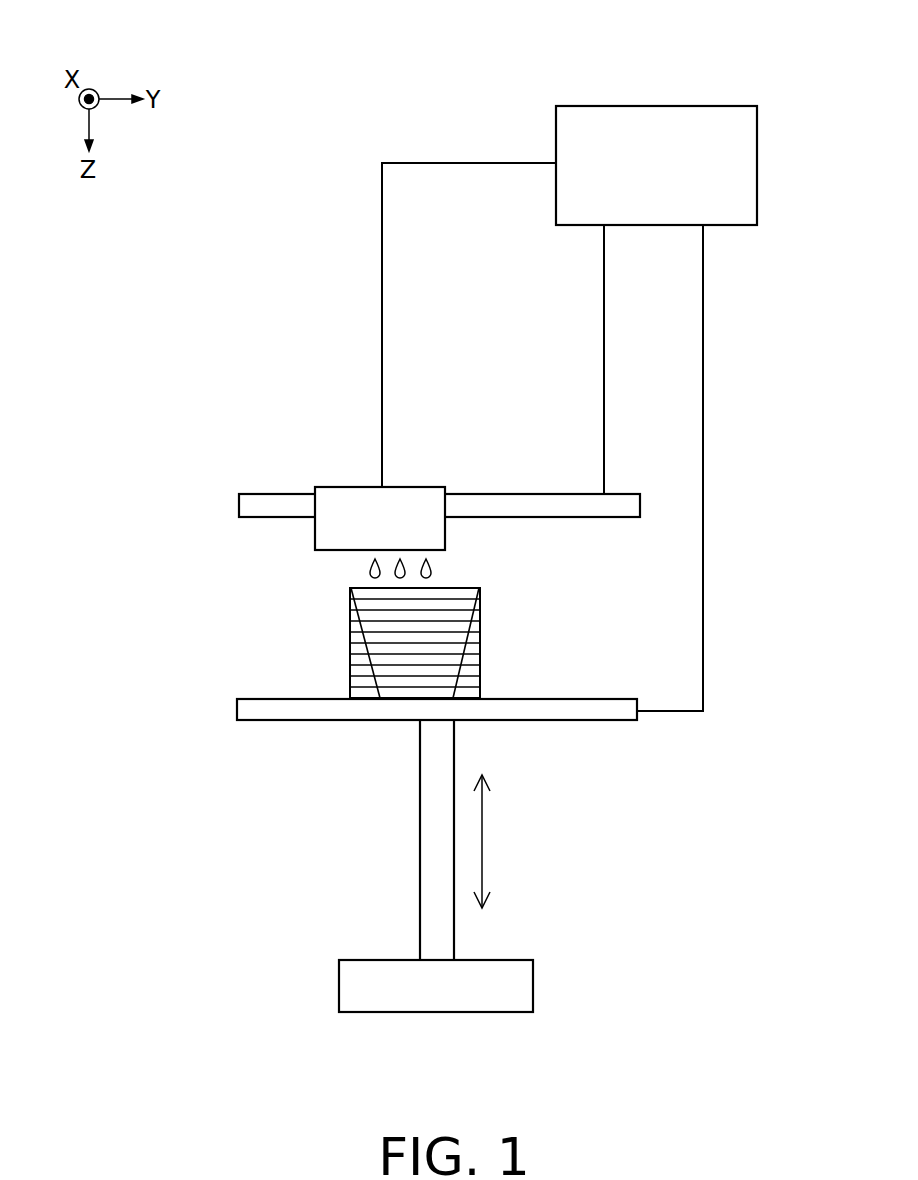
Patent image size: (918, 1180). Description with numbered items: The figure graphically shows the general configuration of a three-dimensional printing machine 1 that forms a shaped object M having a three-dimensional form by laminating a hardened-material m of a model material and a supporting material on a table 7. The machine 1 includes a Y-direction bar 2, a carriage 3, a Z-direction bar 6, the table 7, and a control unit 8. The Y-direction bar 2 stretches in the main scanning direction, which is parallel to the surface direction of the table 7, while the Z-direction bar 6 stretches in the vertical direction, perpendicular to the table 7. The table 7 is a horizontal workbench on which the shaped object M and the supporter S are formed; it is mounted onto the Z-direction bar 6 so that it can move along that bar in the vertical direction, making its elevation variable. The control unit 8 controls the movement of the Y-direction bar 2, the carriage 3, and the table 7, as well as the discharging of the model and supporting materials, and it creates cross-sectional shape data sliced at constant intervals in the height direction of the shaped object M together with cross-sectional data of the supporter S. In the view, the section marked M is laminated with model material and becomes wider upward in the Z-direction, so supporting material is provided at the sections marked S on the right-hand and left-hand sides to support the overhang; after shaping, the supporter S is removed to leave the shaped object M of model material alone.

The three-dimensional printing machine 1 is at (815, 52).
The Y-direction bar 2 is at (535, 494).
The carriage 3 is at (414, 487).
The Z-direction bar 6 is at (420, 848).
The table 7 is at (597, 699).
The control unit 8 is at (728, 106).
The shaped object M is at (460, 582).
The hardened-material m is at (467, 604).
The supporter S is at (345, 650).